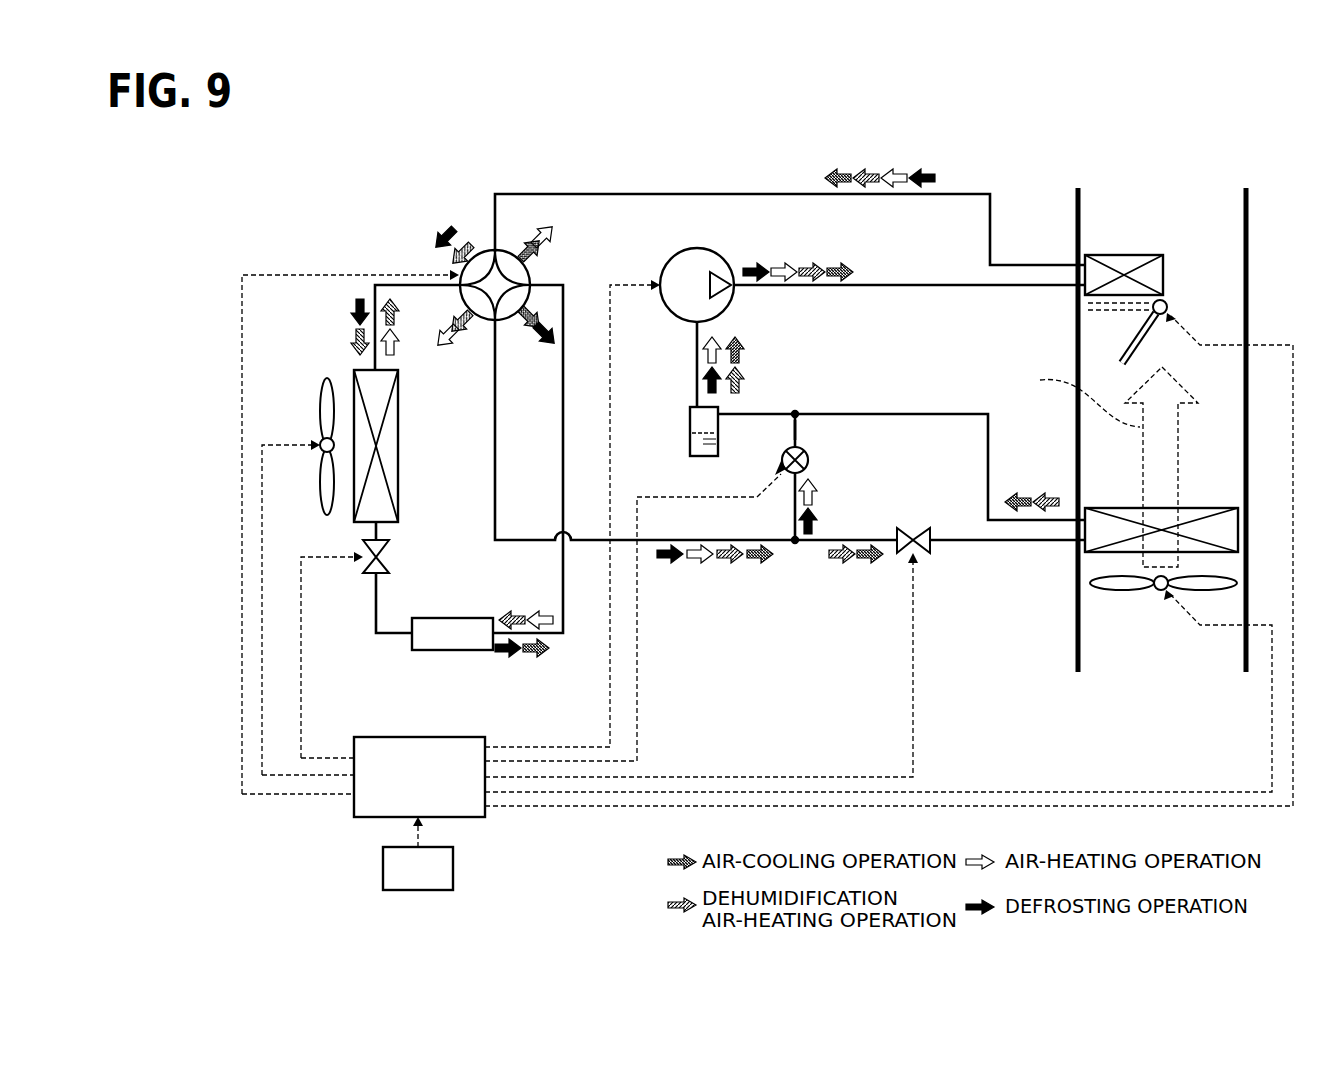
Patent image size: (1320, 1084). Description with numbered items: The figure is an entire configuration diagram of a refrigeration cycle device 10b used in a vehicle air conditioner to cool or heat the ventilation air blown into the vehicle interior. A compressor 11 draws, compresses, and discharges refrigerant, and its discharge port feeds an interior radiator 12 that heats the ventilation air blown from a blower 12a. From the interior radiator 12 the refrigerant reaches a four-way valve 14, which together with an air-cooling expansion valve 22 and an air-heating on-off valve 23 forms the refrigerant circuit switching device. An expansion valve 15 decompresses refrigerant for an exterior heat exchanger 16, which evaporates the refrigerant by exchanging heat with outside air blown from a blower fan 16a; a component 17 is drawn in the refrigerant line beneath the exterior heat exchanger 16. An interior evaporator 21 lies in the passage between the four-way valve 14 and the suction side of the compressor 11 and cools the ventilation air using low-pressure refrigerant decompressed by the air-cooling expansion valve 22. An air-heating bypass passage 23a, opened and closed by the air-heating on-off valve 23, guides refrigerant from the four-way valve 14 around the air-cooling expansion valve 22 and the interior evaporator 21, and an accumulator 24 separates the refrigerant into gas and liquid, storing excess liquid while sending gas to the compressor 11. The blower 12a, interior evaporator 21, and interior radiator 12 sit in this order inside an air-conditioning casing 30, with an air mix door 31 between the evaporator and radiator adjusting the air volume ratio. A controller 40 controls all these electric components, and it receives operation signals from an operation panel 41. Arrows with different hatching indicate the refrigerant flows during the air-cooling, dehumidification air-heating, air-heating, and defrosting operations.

The refrigeration cycle device 10b is at (975, 166).
The compressor 11 is at (722, 258).
The interior radiator 12 is at (1124, 255).
The blower 12a is at (1128, 596).
The four-way valve 14 is at (508, 323).
The expansion valve 15 is at (368, 572).
The exterior heat exchanger 16 is at (399, 416).
The blower fan 16a is at (322, 498).
The accumulator 17 is at (455, 618).
The interior evaporator 21 is at (1197, 508).
The air-cooling expansion valve 22 is at (935, 514).
The air-heating on-off valve 23 is at (786, 450).
The air-heating bypass passage 23a is at (798, 436).
The accumulator 24 is at (690, 452).
The air-conditioning casing 30 is at (1247, 270).
The air mix door 31 is at (1168, 303).
The controller 40 is at (418, 737).
The operation panel 41 is at (453, 860).